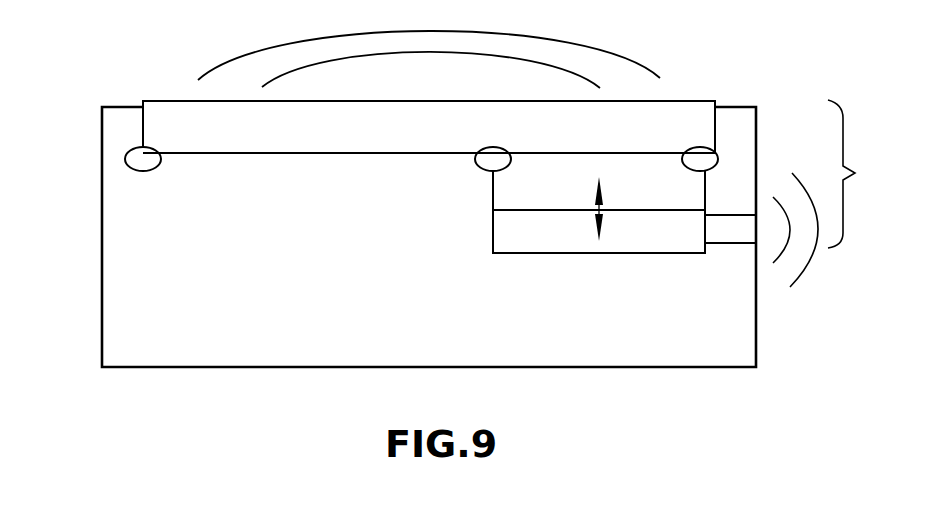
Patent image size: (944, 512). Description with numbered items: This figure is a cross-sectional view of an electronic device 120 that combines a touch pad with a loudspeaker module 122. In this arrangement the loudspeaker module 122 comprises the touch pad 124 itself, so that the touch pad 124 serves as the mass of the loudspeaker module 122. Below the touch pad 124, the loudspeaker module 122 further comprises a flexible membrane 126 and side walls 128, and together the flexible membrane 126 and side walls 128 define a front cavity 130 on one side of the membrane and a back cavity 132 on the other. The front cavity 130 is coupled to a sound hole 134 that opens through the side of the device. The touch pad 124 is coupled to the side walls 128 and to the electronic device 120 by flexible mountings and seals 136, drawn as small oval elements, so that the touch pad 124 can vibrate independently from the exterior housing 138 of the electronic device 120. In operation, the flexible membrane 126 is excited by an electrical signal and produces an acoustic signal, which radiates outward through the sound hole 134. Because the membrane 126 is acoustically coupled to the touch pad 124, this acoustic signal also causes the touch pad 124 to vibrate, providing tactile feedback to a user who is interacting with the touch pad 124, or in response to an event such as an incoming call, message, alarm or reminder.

The electronic device 120 is at (96, 79).
The loudspeaker module 122 is at (840, 193).
The touch pad 124 is at (182, 120).
The flexible membrane 126 is at (518, 208).
The side walls 128 is at (562, 255).
The front cavity 130 is at (617, 242).
The back cavity 132 is at (692, 192).
The sound hole 134 is at (728, 232).
The flexible mountings and seals 136 is at (143, 171).
The exterior housing 138 is at (102, 318).